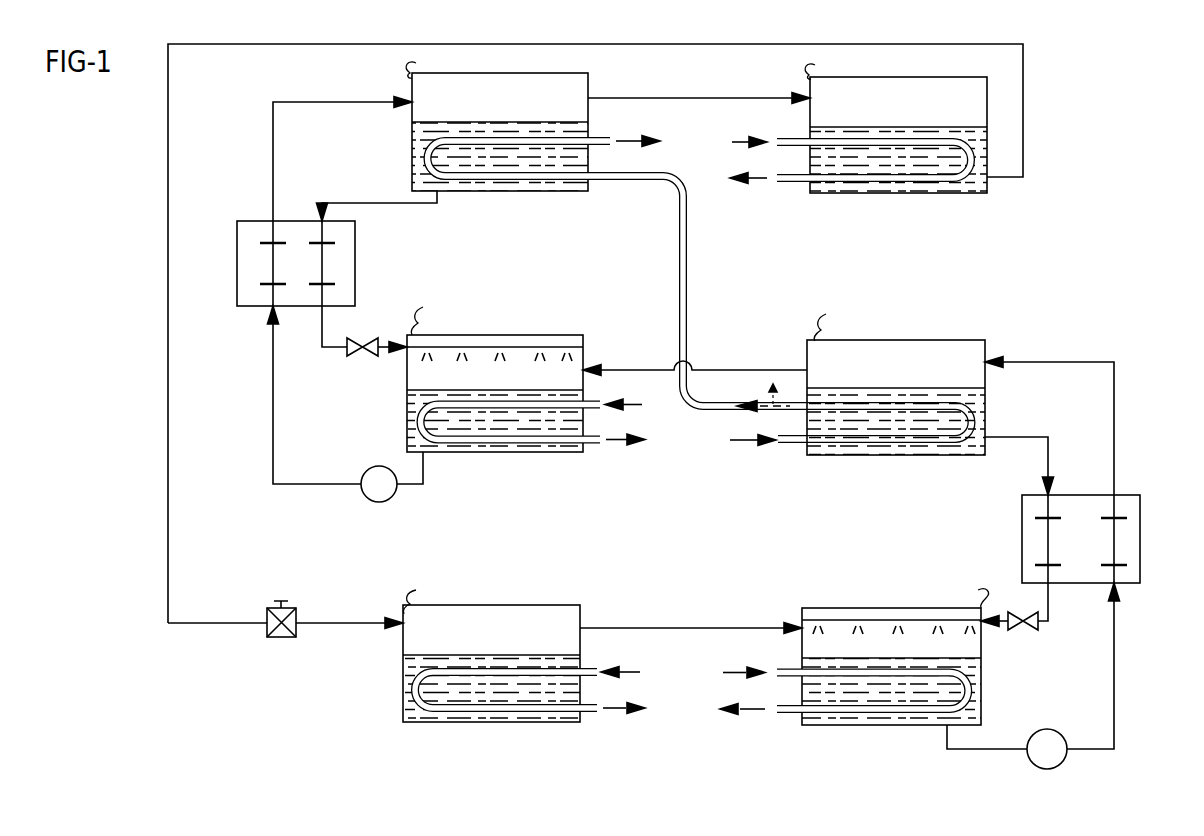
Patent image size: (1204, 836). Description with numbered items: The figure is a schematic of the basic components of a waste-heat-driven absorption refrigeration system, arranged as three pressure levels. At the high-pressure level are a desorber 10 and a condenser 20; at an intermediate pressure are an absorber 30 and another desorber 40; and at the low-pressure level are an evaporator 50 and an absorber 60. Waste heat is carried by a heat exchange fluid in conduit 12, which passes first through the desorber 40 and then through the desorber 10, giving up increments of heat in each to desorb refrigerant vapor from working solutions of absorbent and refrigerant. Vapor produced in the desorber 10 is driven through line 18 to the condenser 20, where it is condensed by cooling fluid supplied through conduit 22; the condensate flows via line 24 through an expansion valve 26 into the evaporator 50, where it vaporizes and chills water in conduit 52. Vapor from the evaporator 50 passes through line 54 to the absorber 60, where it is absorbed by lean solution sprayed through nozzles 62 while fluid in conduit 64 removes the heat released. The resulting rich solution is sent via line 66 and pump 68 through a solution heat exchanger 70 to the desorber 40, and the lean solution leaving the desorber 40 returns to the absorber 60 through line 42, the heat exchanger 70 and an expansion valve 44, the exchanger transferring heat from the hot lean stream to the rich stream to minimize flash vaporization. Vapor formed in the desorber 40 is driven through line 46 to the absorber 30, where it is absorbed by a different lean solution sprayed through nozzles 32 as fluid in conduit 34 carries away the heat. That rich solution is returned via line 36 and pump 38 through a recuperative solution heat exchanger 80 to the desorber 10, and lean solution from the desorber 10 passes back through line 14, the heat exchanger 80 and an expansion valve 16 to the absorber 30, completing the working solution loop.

The desorber 10 is at (412, 156).
The conduit 12 is at (597, 138).
The line 14 is at (402, 204).
The expansion valve 16 is at (352, 356).
The line 18 is at (737, 98).
The condenser 20 is at (946, 193).
The conduit 22 is at (795, 184).
The line 24 is at (168, 247).
The expansion valve 26 is at (276, 638).
The absorber 30 is at (407, 410).
The nozzles 32 is at (548, 349).
The conduit 34 is at (556, 444).
The line 36 is at (273, 440).
The pump 38 is at (392, 496).
The desorber 40 is at (900, 456).
The line 42 is at (1012, 438).
The expansion valve 44 is at (1035, 631).
The line 46 is at (763, 368).
The evaporator 50 is at (403, 699).
The conduit 52 is at (590, 714).
The line 54 is at (688, 628).
The absorber 60 is at (830, 725).
The nozzles 62 is at (843, 620).
The conduit 64 is at (784, 667).
The line 66 is at (1075, 361).
The pump 68 is at (1062, 762).
The solution heat exchanger 70 is at (1140, 545).
The solution heat exchanger 80 is at (237, 275).